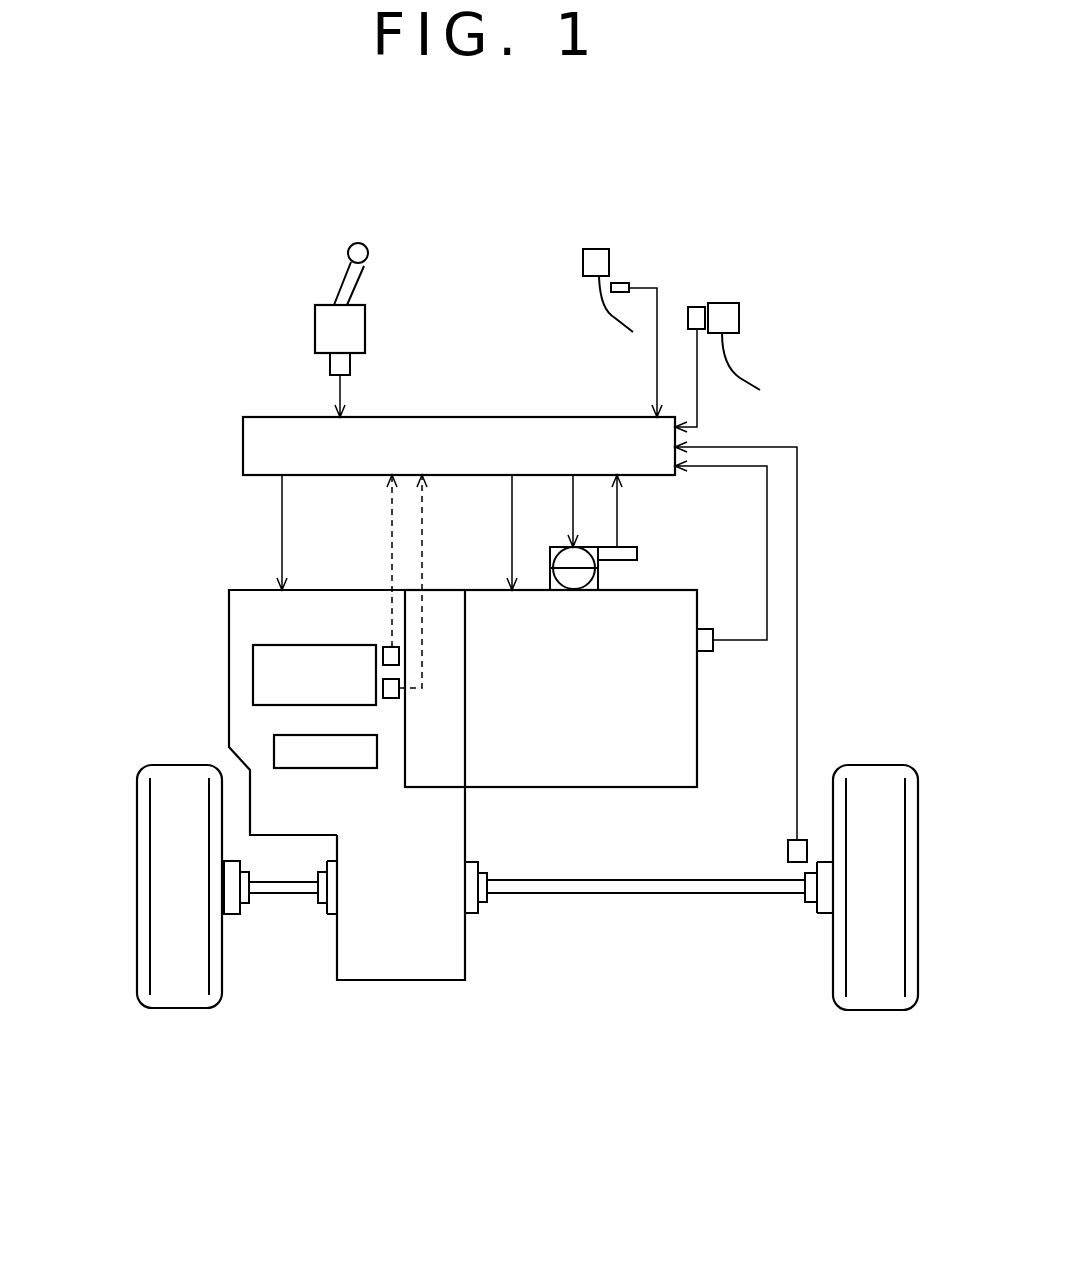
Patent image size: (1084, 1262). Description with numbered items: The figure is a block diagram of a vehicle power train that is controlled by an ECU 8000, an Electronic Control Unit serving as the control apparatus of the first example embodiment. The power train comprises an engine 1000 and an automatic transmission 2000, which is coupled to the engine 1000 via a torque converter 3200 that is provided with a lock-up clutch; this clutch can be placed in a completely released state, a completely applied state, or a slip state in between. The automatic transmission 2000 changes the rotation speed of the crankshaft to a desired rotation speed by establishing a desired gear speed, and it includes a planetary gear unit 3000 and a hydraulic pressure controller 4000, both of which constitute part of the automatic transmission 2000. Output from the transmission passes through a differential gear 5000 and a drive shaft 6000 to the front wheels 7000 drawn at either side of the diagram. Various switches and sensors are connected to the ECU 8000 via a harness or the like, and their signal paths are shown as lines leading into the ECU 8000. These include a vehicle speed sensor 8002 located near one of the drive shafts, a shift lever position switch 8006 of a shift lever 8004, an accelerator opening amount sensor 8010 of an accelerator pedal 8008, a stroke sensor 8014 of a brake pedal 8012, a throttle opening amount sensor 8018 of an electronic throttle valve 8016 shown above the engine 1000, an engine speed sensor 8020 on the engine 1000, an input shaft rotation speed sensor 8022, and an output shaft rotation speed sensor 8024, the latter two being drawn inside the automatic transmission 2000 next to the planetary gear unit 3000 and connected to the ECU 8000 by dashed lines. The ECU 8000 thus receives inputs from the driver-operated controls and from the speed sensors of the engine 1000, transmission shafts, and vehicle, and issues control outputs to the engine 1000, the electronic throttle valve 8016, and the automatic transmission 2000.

The engine 1000 is at (585, 787).
The automatic transmission 2000 is at (313, 590).
The planetary gear unit 3000 is at (253, 673).
The torque converter 3200 is at (441, 590).
The hydraulic pressure controller 4000 is at (323, 768).
The differential gear 5000 is at (400, 980).
The drive shaft 6000 is at (283, 897).
The front wheels 7000 is at (180, 1008).
The ECU 8000 is at (542, 417).
The vehicle speed sensor 8002 is at (788, 851).
The shift lever 8004 is at (356, 286).
The shift lever position switch 8006 is at (330, 362).
The accelerator pedal 8008 is at (603, 300).
The accelerator opening amount sensor 8010 is at (622, 283).
The brake pedal 8012 is at (735, 348).
The stroke sensor 8014 is at (700, 303).
The electronic throttle valve 8016 is at (598, 585).
The throttle opening amount sensor 8018 is at (637, 553).
The engine speed sensor 8020 is at (705, 652).
The input shaft rotation speed sensor 8022 is at (383, 652).
The output shaft rotation speed sensor 8024 is at (383, 695).